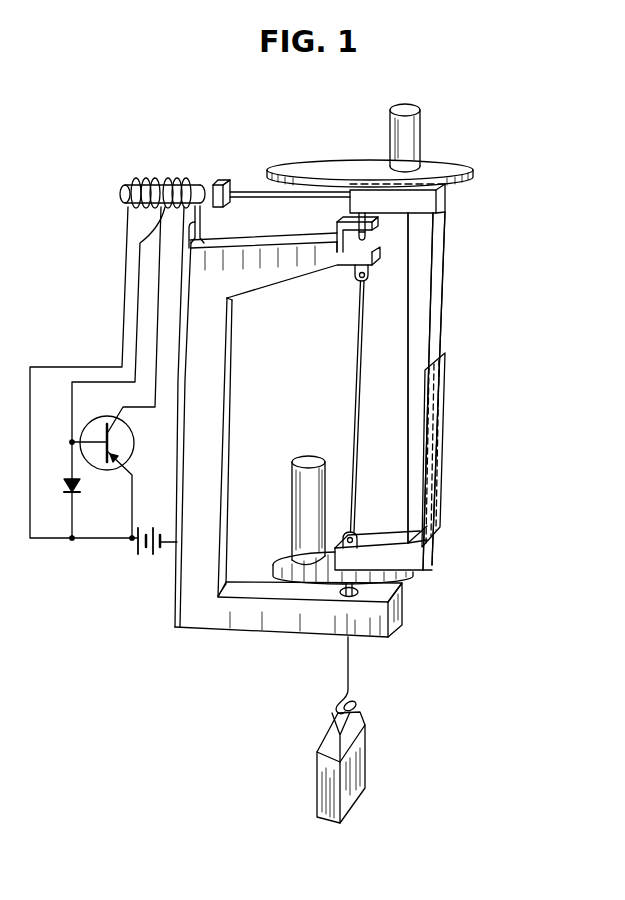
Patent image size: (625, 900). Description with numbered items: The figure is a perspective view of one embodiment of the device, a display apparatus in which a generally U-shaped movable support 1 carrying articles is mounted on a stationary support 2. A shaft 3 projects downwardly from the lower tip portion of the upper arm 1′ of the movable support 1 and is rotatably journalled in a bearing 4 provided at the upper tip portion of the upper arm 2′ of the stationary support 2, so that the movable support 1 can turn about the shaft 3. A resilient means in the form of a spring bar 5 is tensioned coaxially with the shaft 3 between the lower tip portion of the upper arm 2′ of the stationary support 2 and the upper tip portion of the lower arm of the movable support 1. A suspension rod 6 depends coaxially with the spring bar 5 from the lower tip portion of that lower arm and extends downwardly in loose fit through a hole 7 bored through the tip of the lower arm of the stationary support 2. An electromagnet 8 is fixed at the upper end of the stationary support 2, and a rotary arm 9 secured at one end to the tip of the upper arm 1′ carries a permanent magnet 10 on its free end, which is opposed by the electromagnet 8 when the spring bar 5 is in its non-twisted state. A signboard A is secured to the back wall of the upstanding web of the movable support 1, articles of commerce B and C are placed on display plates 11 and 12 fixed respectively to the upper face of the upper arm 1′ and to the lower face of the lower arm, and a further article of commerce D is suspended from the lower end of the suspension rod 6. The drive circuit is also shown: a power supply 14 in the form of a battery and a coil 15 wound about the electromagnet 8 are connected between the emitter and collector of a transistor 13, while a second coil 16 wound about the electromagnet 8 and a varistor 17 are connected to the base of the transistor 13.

The movable support 1 is at (445, 311).
The upper arm of the movable support 1′ is at (400, 202).
The stationary support 2 is at (197, 570).
The upper arm of the stationary support 2′ is at (270, 270).
The shaft 3 is at (364, 236).
The bearing 4 is at (340, 233).
The spring bar 5 is at (358, 348).
The suspension rod 6 is at (352, 668).
The hole 7 is at (338, 593).
The electromagnet 8 is at (120, 196).
The rotary arm 9 is at (236, 172).
The permanent magnet 10 is at (219, 180).
The display plate 11 is at (450, 170).
The display plate 12 is at (410, 578).
The transistor 13 is at (110, 468).
The power supply 14 is at (145, 553).
The coil 15 is at (168, 180).
The coil 16 is at (135, 178).
The varistor 17 is at (72, 494).
The signboard A is at (447, 380).
The article of commerce B is at (413, 120).
The article of commerce C is at (303, 487).
The article of commerce D is at (366, 765).